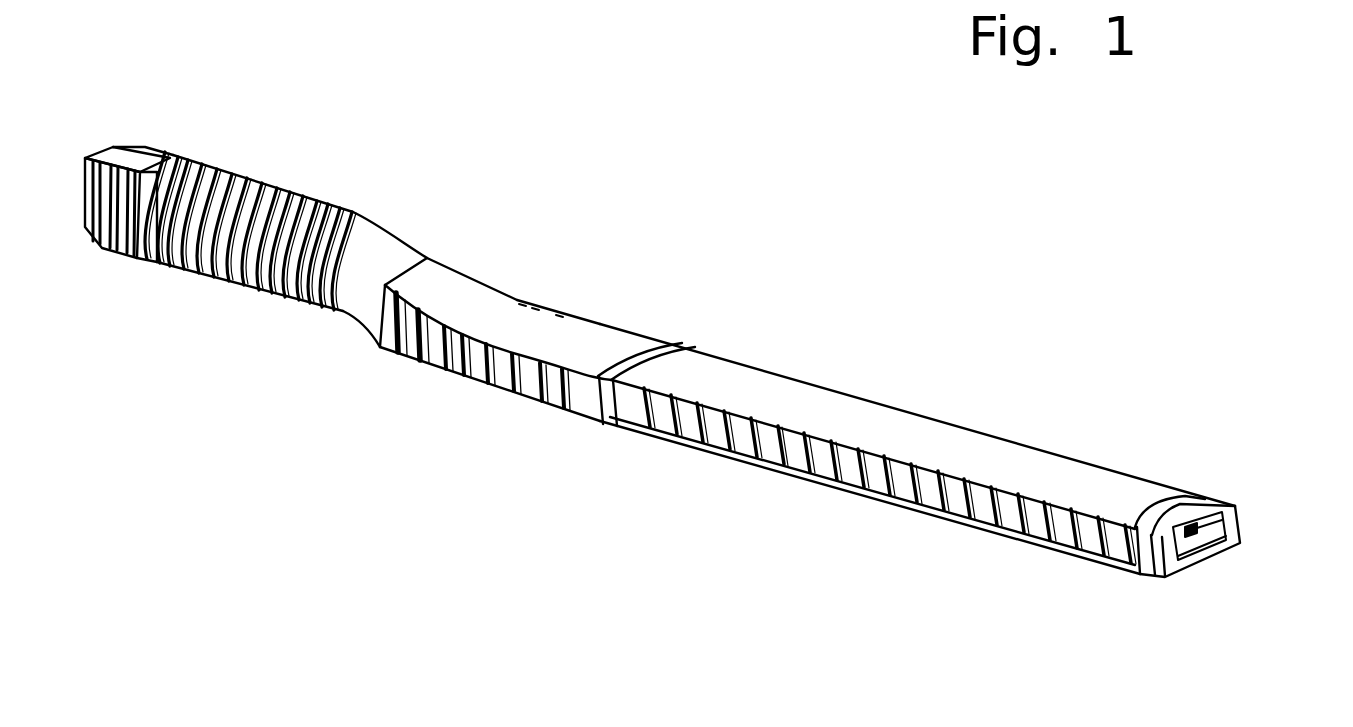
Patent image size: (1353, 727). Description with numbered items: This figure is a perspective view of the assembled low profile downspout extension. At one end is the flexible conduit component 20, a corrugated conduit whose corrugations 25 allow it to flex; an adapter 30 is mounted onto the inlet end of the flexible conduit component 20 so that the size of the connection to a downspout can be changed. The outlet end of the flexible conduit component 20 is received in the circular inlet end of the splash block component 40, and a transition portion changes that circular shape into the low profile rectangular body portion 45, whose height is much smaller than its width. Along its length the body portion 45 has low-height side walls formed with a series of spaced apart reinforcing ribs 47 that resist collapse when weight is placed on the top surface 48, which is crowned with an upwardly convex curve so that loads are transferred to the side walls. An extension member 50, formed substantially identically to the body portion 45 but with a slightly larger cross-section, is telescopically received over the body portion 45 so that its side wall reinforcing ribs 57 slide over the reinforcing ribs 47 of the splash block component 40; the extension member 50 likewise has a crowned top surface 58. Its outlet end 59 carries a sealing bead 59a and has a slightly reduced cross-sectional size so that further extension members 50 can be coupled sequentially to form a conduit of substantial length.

The flexible conduit component 20 is at (301, 194).
The corrugations of hose 25 is at (250, 290).
The adapter 30 is at (122, 150).
The splash block component 40 is at (518, 298).
The body portion 45 is at (583, 345).
The reinforcing ribs 47 is at (563, 389).
The top surface 48 is at (552, 333).
The extension member 50 is at (940, 437).
The reinforcing ribs 57 is at (835, 470).
The crowned top surface 58 is at (1022, 473).
The outlet end 59 is at (1190, 563).
The sealing bead 59a is at (1203, 498).